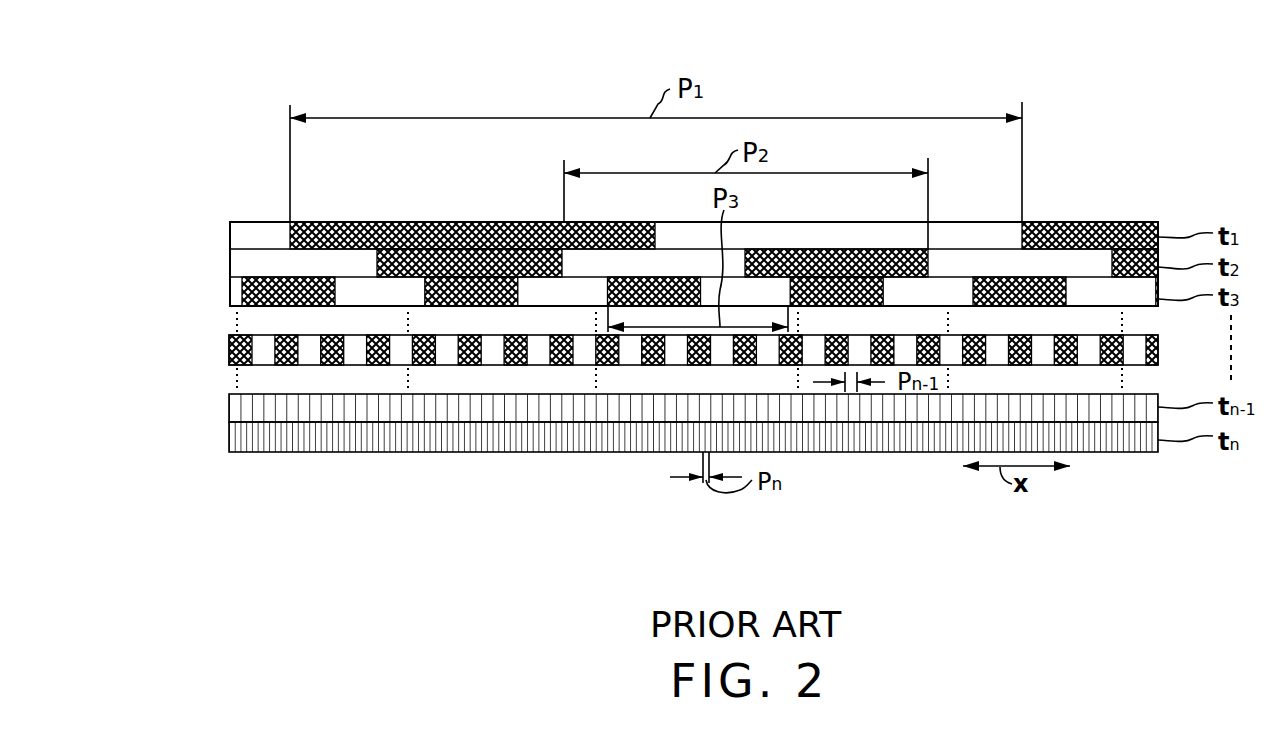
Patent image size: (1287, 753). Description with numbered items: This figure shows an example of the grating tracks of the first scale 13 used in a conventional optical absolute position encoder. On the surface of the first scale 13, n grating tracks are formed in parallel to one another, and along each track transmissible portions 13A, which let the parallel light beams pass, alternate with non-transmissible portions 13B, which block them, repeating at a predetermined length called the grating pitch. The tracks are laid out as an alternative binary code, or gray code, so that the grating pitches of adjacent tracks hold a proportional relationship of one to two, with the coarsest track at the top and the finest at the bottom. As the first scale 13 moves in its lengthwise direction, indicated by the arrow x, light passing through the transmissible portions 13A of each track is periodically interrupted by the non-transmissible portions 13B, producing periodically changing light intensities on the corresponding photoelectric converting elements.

The first scale 13 is at (985, 96).
The transmissible portions 13A is at (955, 232).
The non-transmissible portions 13B is at (420, 222).